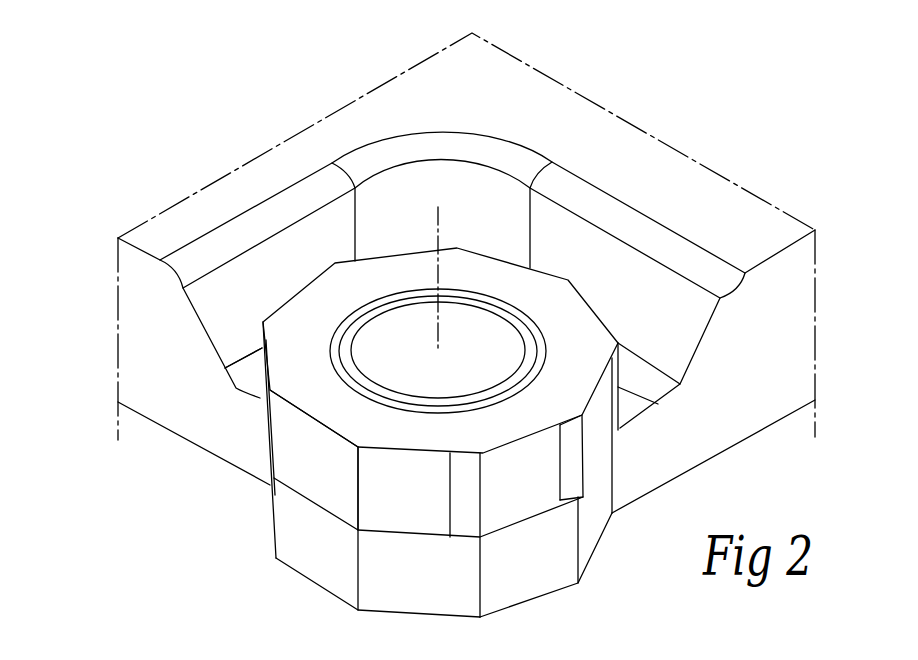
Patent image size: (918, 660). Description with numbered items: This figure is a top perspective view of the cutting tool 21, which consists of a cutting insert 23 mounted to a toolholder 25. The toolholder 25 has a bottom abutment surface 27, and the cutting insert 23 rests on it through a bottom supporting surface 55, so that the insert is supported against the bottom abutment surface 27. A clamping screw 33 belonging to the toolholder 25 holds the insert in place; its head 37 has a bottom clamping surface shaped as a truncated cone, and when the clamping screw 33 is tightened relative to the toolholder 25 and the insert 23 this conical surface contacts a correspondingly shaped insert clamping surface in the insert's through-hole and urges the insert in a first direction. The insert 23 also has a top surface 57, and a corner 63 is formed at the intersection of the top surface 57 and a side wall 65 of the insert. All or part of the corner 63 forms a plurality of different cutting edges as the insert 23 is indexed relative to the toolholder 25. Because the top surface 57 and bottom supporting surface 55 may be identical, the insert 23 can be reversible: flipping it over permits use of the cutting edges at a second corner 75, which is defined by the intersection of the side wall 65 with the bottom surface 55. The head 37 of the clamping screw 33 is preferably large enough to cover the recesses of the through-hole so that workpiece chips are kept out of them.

The cutting tool 21 is at (437, 273).
The cutting insert 23 is at (422, 433).
The toolholder 25 is at (186, 229).
The bottom abutment surface 27 is at (259, 397).
The clamping screw 33 is at (398, 352).
The head 37 is at (405, 327).
The bottom supporting surface 55 is at (300, 497).
The top surface 57 is at (582, 347).
The corner 63 is at (592, 400).
The side wall 65 is at (505, 508).
The corner 75 is at (378, 523).